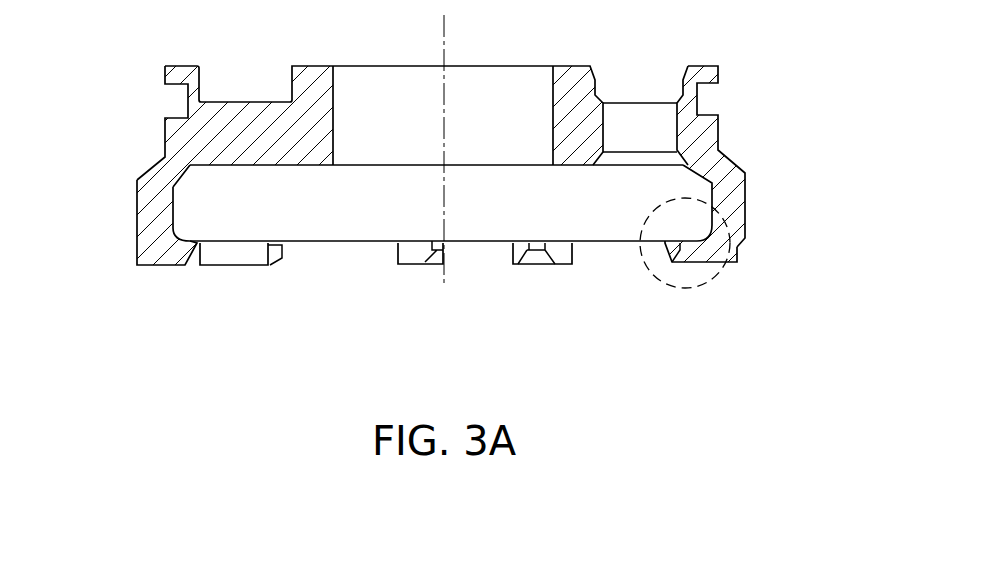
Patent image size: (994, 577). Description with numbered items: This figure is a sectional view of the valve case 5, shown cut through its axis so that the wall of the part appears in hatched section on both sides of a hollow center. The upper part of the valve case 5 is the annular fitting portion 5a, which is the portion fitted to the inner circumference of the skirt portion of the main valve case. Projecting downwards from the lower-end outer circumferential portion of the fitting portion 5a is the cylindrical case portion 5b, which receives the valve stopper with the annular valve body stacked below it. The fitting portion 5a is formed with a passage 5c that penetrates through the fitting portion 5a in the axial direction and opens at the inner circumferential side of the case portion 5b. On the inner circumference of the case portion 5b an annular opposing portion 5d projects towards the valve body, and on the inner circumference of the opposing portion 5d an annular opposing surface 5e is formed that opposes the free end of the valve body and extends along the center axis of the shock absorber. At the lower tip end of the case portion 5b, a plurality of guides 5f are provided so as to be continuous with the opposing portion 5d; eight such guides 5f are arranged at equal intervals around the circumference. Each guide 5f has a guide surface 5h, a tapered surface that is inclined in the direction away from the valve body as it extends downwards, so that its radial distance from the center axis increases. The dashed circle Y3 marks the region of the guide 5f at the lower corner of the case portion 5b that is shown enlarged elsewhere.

The valve case 5 is at (436, 169).
The fitting portion 5a is at (163, 130).
The case portion 5b is at (137, 210).
The passage 5c is at (653, 132).
The opposing portion 5d is at (716, 205).
The opposing surface 5e is at (345, 243).
The guide 5f is at (158, 267).
The guide surface 5h is at (272, 266).
The enlarged region Y3 is at (685, 261).